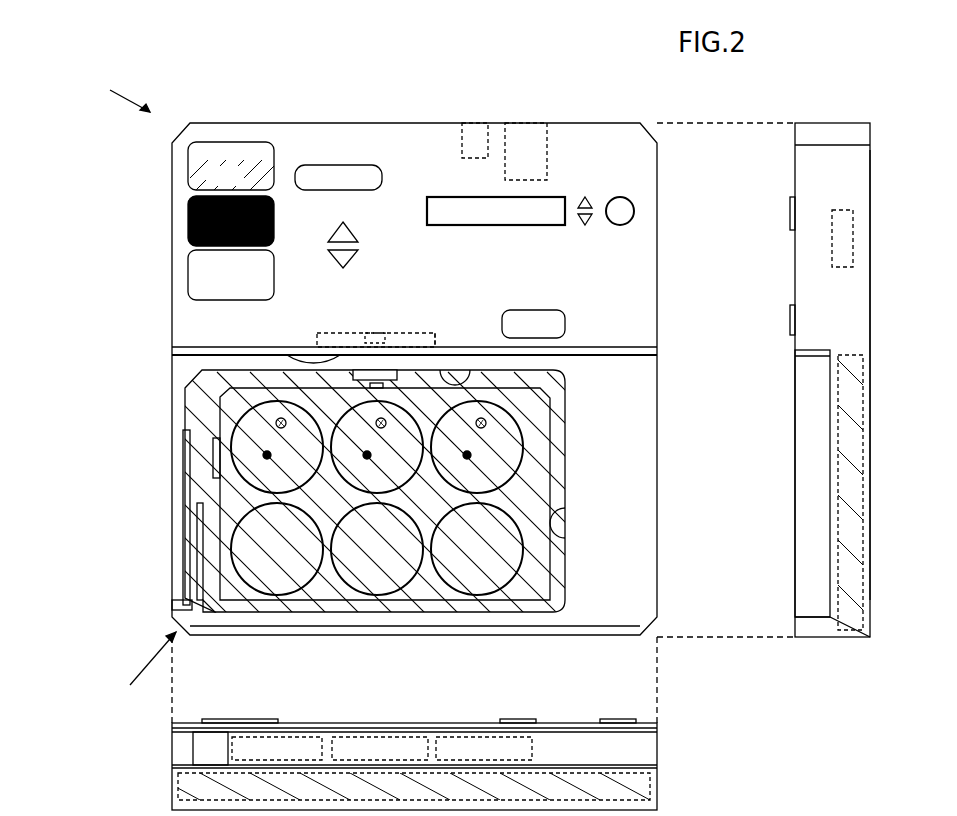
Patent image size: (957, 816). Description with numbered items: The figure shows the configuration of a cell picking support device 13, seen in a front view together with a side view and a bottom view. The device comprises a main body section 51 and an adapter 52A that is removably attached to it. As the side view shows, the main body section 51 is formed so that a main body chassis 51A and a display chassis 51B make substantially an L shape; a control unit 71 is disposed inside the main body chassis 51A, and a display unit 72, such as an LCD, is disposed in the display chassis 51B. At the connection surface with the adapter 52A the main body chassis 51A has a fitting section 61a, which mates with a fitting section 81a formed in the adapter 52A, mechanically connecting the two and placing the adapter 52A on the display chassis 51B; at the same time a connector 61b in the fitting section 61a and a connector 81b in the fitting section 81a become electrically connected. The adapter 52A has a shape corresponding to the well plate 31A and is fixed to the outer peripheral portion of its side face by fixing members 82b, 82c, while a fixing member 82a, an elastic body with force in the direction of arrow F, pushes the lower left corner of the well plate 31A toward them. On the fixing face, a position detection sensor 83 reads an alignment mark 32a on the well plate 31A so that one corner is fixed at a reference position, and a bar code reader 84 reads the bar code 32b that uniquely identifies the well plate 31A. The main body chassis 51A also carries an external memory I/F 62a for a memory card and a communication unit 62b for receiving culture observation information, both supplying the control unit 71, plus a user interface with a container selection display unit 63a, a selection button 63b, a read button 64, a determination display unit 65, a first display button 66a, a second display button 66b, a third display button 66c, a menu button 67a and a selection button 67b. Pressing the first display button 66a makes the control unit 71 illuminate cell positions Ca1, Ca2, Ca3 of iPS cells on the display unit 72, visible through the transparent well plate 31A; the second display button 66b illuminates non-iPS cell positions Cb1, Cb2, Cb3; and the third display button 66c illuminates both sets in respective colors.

The cell picking support device 13 is at (119, 89).
The main body section 51 is at (645, 172).
The main body chassis 51A is at (866, 191).
The display chassis 51B is at (868, 622).
The adapter 52A is at (640, 396).
The external memory I/F 62a is at (526, 123).
The communication unit 62b is at (476, 123).
The container selection display unit 63a is at (490, 228).
The selection button 63b is at (586, 228).
The read button 64 is at (634, 211).
The determination display unit 65 is at (540, 310).
The first display button 66a is at (188, 162).
The second display button 66b is at (188, 222).
The third display button 66c is at (188, 276).
The menu button 67a is at (374, 190).
The selection button 67b is at (350, 257).
The control unit 71 is at (843, 210).
The display unit 72 is at (218, 488).
The fitting section 81a is at (288, 352).
The connector 81b is at (335, 333).
The fitting section 61a is at (438, 333).
The connector 61b is at (376, 333).
The fixing member 82a is at (190, 578).
The fixing member 82b is at (470, 380).
The fixing member 82c is at (570, 524).
The position detection sensor 83 is at (300, 372).
The bar code reader 84 is at (183, 440).
The alignment mark 32a is at (350, 374).
The bar code 32b is at (213, 460).
The well plate 31A is at (200, 518).
The cell position Ca1 is at (281, 428).
The cell position Ca2 is at (381, 428).
The cell position Ca3 is at (481, 428).
The cell position Cb1 is at (267, 459).
The cell position Cb2 is at (367, 459).
The cell position Cb3 is at (467, 459).
The arrow F is at (144, 668).